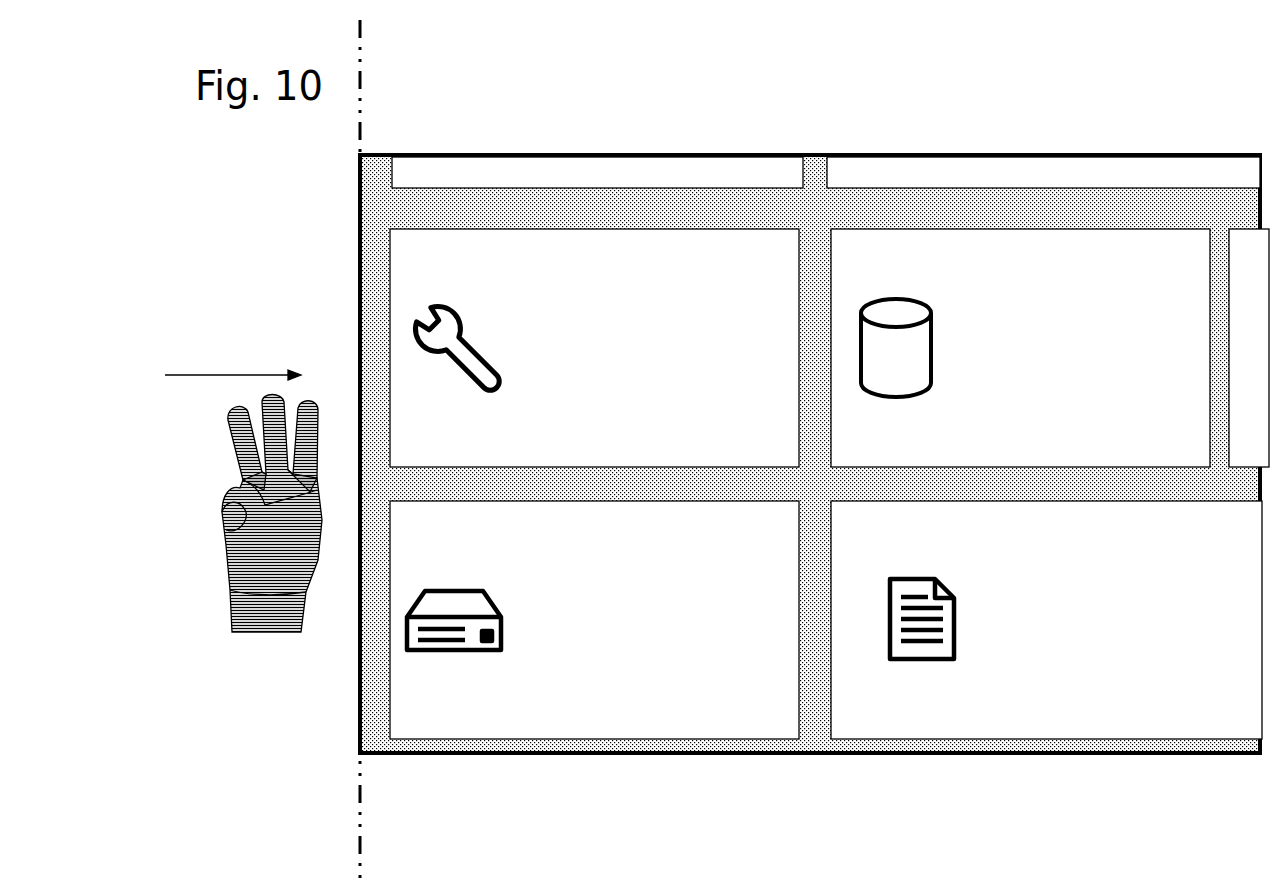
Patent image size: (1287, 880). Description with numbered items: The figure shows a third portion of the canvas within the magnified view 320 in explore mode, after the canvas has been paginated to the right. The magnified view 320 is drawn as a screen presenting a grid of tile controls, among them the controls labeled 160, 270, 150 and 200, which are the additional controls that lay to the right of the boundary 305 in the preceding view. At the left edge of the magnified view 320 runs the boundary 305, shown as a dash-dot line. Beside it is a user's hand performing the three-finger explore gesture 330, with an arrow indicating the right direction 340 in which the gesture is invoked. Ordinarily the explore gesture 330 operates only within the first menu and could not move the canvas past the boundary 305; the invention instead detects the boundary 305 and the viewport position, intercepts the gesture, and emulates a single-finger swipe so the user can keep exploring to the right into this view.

The boundary 305 is at (358, 816).
The magnified view 320 is at (565, 155).
The Tools tile 160 is at (612, 422).
The My Data tile 270 is at (1039, 423).
The Files tile 150 is at (612, 692).
The My Documents tile 200 is at (1150, 705).
The right direction 340 is at (222, 374).
The explore gesture 330 is at (240, 636).